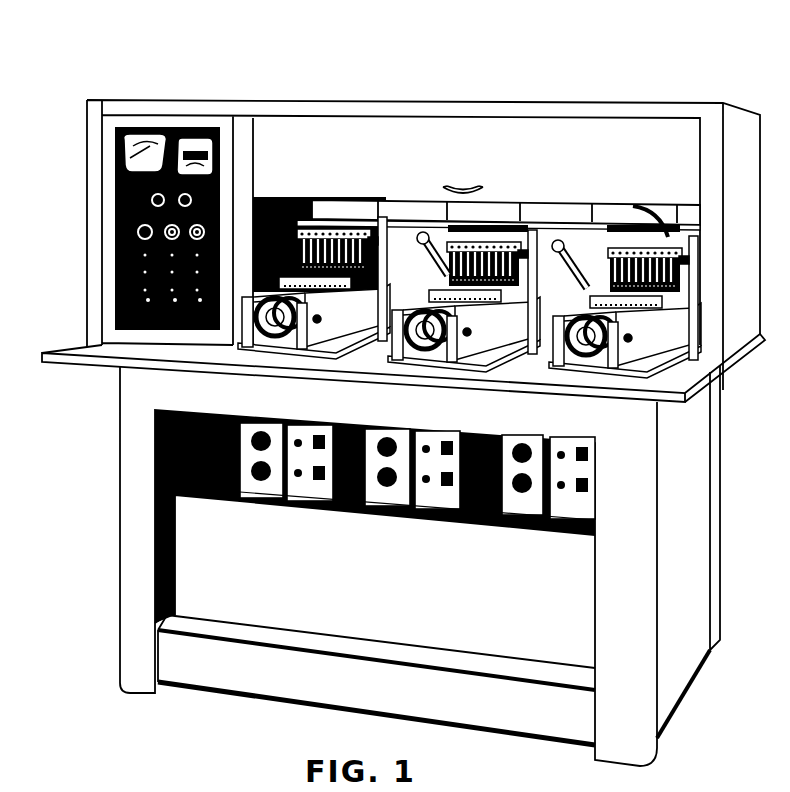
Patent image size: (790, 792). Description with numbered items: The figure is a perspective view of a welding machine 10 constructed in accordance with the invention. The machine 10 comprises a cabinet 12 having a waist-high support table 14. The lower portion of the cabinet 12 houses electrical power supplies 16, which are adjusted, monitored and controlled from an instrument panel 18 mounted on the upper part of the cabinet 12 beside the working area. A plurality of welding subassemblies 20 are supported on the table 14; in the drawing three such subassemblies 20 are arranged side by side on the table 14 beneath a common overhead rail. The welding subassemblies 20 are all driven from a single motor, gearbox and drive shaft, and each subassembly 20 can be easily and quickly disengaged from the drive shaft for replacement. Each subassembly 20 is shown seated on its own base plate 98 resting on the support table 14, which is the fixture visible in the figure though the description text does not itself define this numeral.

The welding machine 10 is at (130, 74).
The cabinet 12 is at (121, 484).
The support table 14 is at (120, 350).
The electrical power supplies 16 is at (557, 548).
The instrument panel 18 is at (115, 230).
The welding subassemblies 20 is at (603, 214).
The test fixtures 98 is at (677, 376).